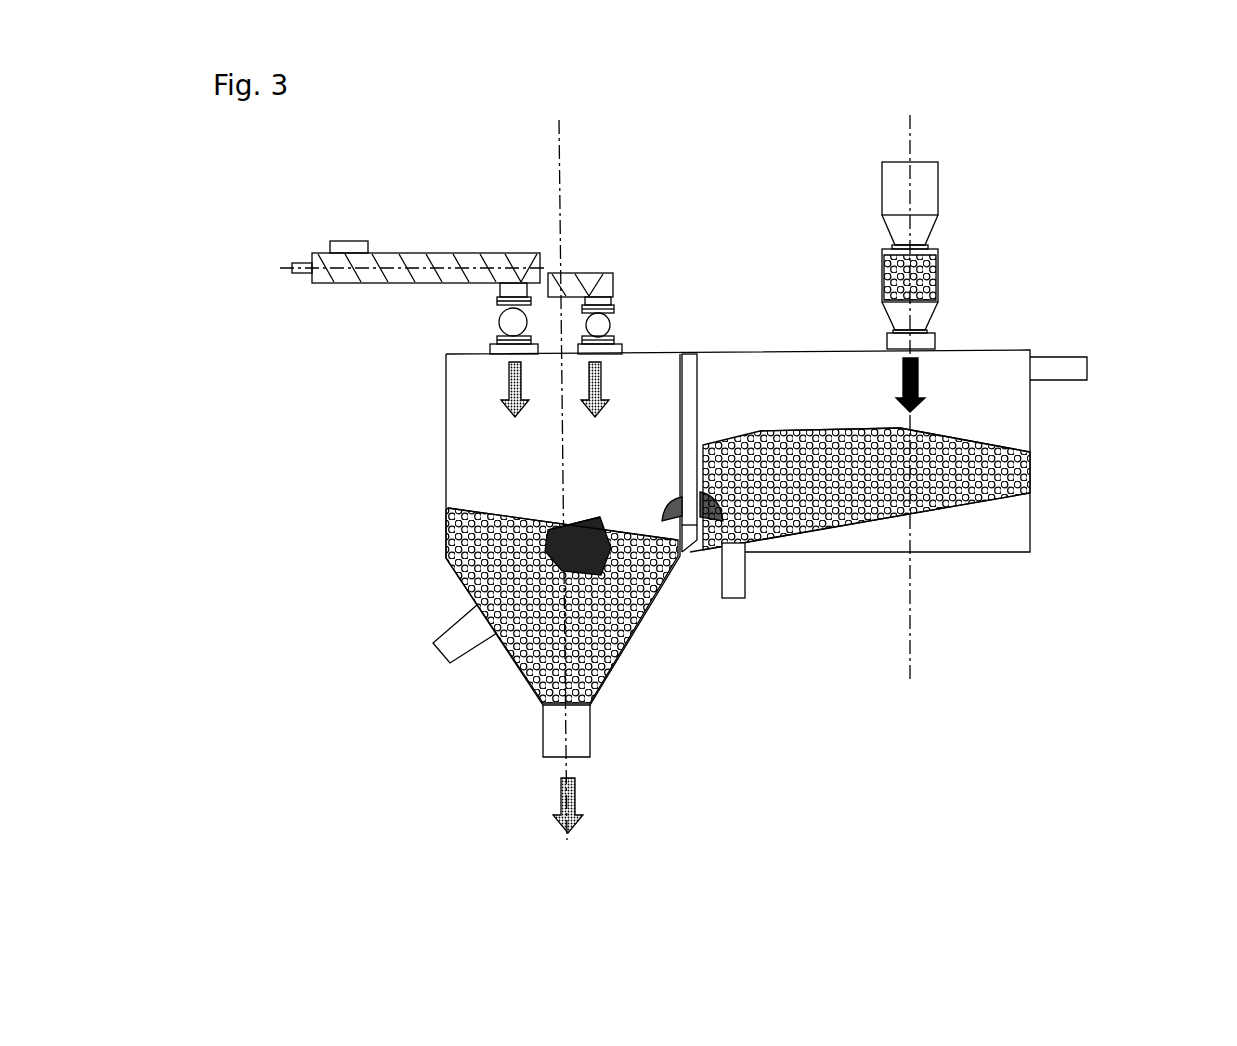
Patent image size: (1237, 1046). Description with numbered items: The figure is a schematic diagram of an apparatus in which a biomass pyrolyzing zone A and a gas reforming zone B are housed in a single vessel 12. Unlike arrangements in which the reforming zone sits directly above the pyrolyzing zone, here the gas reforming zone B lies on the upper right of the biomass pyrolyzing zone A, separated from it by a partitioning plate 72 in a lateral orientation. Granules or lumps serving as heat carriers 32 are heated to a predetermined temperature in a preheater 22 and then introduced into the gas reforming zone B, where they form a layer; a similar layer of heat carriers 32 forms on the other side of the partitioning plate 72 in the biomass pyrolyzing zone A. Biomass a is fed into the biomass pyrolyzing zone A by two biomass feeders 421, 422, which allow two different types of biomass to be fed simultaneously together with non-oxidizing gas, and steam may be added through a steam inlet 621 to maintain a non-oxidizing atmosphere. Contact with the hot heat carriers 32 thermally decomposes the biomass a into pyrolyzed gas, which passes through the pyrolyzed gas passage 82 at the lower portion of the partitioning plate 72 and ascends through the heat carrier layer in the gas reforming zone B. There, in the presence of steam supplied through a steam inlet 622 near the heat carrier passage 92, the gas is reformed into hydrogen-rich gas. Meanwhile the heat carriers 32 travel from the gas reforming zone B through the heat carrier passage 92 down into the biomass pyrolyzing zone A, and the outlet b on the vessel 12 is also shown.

The vessel 12 is at (778, 348).
The preheater 22 is at (940, 247).
The heat carriers 32 is at (925, 292).
The biomass feeder 421 is at (488, 347).
The biomass feeder 422 is at (622, 342).
The steam inlet 621 is at (455, 627).
The steam inlet 622 is at (748, 593).
The partitioning plate 72 is at (688, 397).
The pyrolyzed gas passage 82 is at (689, 530).
The heat carrier passage 92 is at (689, 530).
The biomass pyrolyzing zone A is at (533, 505).
The gas reforming zone B is at (822, 422).
The biomass a is at (543, 539).
The outlet b is at (1075, 362).